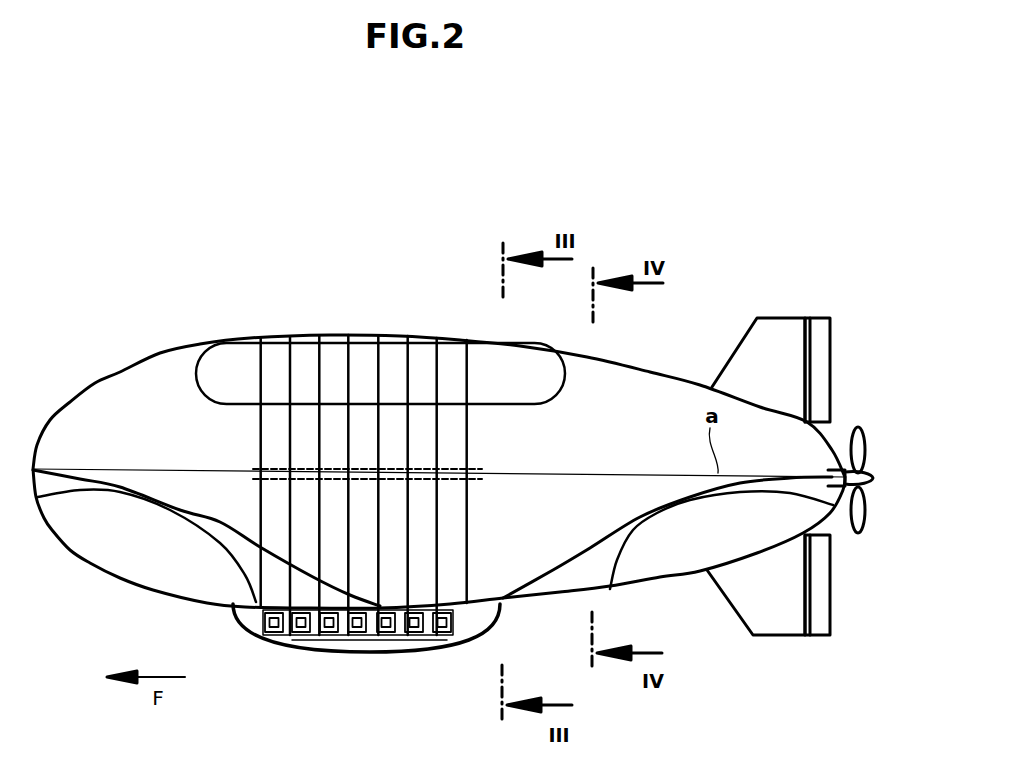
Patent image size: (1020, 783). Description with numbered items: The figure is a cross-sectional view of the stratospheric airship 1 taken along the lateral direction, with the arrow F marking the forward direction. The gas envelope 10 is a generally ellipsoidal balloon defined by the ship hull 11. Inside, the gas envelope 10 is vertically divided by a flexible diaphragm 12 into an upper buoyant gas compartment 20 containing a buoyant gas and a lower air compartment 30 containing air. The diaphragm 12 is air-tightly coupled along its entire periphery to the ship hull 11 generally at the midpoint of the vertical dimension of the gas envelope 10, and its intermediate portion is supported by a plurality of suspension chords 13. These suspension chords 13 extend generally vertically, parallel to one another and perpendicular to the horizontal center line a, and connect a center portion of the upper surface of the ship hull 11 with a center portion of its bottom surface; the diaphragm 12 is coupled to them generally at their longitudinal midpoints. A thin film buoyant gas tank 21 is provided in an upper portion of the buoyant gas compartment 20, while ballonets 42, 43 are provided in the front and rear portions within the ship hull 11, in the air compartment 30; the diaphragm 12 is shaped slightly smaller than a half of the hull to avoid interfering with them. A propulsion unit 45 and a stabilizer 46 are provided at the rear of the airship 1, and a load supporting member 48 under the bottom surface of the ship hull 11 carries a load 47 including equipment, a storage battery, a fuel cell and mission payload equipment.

The stratospheric airship 1 is at (439, 360).
The gas envelope 10 is at (439, 447).
The ship hull 11 is at (118, 370).
The diaphragm 12 is at (633, 475).
The suspension chords 13 is at (258, 435).
The buoyant gas compartment 20 is at (110, 428).
The thin film buoyant gas tank 21 is at (242, 360).
The air compartment 30 is at (575, 582).
The front ballonet 42 is at (117, 533).
The rear ballonet 43 is at (665, 562).
The propulsion unit 45 is at (868, 515).
The stabilizer 46 is at (787, 337).
The load 47 is at (275, 633).
The load supporting member 48 is at (366, 676).